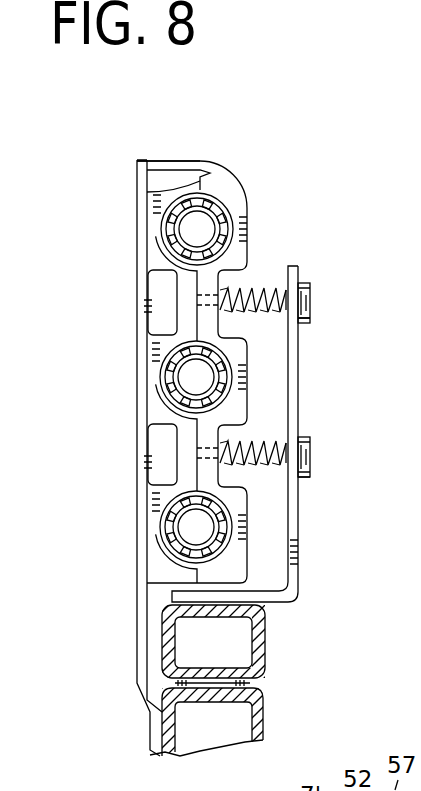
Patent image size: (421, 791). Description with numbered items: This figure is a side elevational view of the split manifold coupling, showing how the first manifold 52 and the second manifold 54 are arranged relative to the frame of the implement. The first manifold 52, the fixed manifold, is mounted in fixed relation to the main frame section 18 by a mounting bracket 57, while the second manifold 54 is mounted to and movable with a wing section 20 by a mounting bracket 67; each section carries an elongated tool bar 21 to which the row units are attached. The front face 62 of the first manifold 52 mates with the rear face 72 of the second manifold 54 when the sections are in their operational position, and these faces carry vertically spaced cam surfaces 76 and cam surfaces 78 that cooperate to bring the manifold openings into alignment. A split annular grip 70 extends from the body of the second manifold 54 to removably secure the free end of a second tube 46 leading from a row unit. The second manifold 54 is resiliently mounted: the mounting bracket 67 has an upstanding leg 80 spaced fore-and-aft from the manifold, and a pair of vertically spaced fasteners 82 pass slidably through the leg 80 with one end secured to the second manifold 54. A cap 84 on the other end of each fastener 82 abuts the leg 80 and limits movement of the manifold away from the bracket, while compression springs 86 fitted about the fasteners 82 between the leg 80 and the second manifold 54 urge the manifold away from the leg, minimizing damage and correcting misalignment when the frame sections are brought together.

The main frame section 18 is at (276, 722).
The frame section 20 is at (280, 676).
The tool bar 21 is at (262, 624).
The second tube 46 is at (170, 233).
The first manifold 52 is at (171, 150).
The second manifold 54 is at (242, 172).
The mounting bracket 57 is at (143, 162).
The front face 62 is at (147, 172).
The mounting bracket 67 is at (310, 549).
The split annular grip 70 is at (247, 213).
The rear face 72 is at (147, 192).
The cam surfaces 76 is at (176, 243).
The cam surfaces 78 is at (165, 225).
The upstanding leg 80 is at (289, 272).
The fasteners 82 is at (320, 305).
The cap 84 is at (306, 322).
The compression springs 86 is at (242, 286).